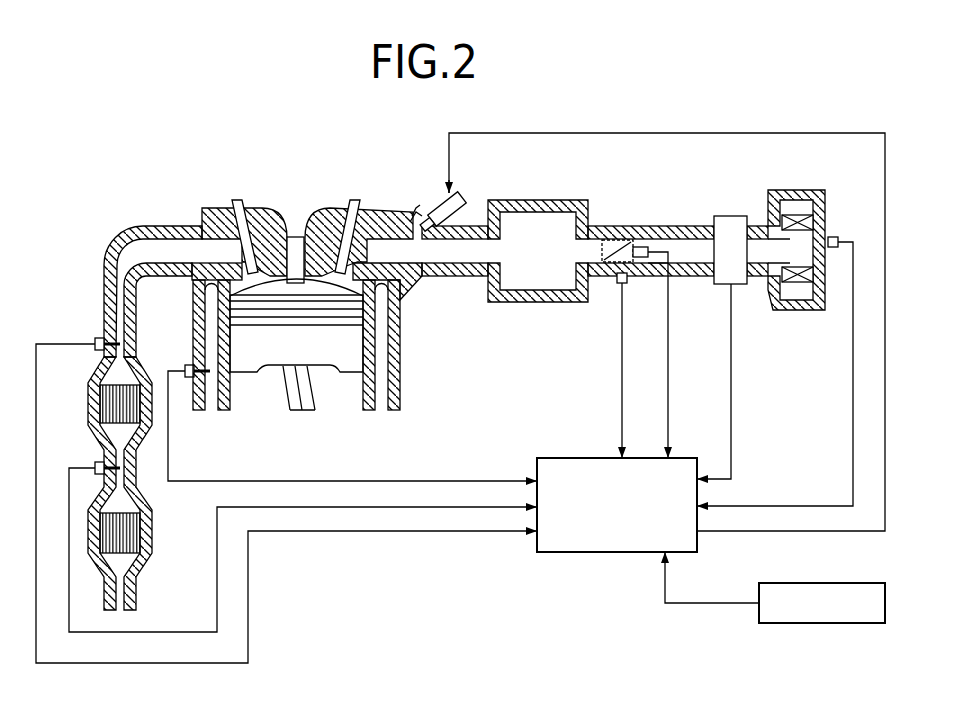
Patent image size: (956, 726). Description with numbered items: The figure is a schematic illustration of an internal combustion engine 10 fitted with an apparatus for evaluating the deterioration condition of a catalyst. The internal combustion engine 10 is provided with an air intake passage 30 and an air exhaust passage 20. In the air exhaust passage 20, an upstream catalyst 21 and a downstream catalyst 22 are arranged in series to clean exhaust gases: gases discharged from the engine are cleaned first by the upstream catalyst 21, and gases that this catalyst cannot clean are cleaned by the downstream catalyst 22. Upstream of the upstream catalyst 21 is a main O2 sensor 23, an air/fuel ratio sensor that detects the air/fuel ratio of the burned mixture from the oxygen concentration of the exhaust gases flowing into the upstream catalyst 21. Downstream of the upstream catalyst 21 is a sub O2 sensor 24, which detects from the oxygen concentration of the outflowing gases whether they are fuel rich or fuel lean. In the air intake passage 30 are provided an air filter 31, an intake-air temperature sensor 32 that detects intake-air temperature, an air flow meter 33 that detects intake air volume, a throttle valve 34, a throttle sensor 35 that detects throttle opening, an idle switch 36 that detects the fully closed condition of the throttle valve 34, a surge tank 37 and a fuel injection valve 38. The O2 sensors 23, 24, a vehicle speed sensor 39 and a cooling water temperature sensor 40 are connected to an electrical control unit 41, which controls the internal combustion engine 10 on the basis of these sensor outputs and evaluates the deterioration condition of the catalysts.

The internal combustion engine 10 is at (405, 370).
The air exhaust passage 20 is at (104, 262).
The upstream catalyst 21 is at (112, 405).
The downstream catalyst 22 is at (128, 540).
The main O2 sensor 23 is at (97, 343).
The sub O2 sensor 24 is at (97, 467).
The air intake passage 30 is at (594, 218).
The air filter 31 is at (788, 190).
The intake-air temperature sensor 32 is at (838, 237).
The air flow meter 33 is at (730, 216).
The throttle valve 34 is at (612, 248).
The throttle sensor 35 is at (642, 262).
The idle switch 36 is at (617, 283).
The surge tank 37 is at (545, 200).
The fuel injection valve 38 is at (460, 198).
The vehicle speed sensor 39 is at (855, 583).
The cooling water temperature sensor 40 is at (187, 368).
The electrical control unit 41 is at (556, 553).